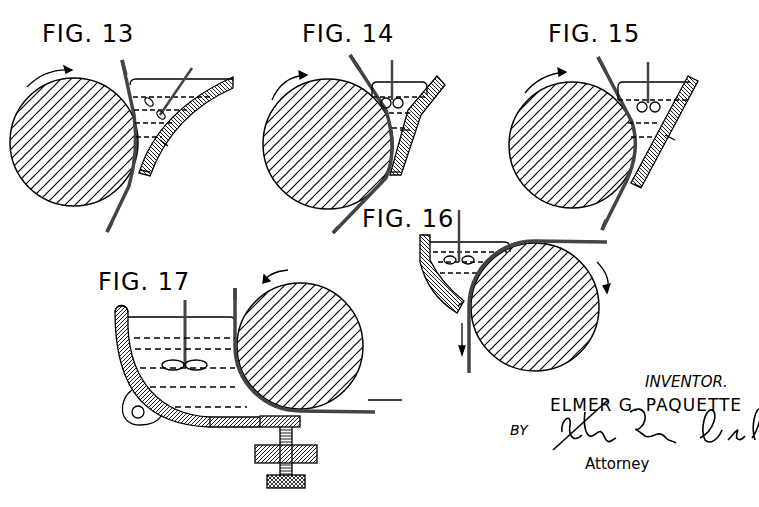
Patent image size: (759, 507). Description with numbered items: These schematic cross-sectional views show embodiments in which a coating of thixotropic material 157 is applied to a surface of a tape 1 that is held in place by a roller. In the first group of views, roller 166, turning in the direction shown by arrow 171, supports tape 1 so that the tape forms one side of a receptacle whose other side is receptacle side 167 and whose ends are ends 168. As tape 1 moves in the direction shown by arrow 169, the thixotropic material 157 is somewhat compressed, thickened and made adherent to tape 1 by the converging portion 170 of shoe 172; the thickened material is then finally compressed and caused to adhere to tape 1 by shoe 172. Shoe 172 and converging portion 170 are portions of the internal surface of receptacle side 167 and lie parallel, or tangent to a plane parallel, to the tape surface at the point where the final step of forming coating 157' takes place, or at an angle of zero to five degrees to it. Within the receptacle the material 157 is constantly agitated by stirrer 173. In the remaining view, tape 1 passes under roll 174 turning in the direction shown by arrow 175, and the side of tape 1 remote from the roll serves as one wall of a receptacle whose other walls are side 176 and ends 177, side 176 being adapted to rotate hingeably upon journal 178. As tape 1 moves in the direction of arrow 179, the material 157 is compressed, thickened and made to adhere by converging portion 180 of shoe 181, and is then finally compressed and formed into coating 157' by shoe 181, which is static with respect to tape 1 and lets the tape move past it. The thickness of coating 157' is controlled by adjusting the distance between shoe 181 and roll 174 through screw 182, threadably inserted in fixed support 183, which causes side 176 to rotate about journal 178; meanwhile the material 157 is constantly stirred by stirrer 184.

In FIG. 13, the tape 1 is at (121, 61).
In FIG. 14, the tape 1 is at (356, 62).
In FIG. 15, the tape 1 is at (603, 58).
In FIG. 17, the tape 1 is at (236, 291).
In FIG. 13, the thixotropic material 157 is at (185, 91).
In FIG. 14, the thixotropic material 157 is at (424, 93).
In FIG. 15, the thixotropic material 157 is at (653, 89).
In FIG. 16, the thixotropic material 157 is at (516, 243).
In FIG. 17, the thixotropic material 157 is at (161, 372).
In FIG. 13, the coating 157' is at (146, 146).
In FIG. 14, the coating 157' is at (385, 144).
In FIG. 15, the coating 157' is at (652, 143).
In FIG. 17, the coating 157' is at (328, 366).
In FIG. 13, the roller 166 is at (72, 197).
In FIG. 14, the roller 166 is at (290, 172).
In FIG. 15, the roller 166 is at (528, 157).
In FIG. 16, the roller 166 is at (587, 318).
In FIG. 13, the receptacle side 167 is at (201, 109).
In FIG. 14, the receptacle side 167 is at (442, 94).
In FIG. 15, the receptacle side 167 is at (703, 92).
In FIG. 13, the ends 168 is at (140, 90).
In FIG. 14, the ends 168 is at (400, 85).
In FIG. 15, the ends 168 is at (676, 87).
In FIG. 13, the arrow 169 is at (131, 205).
In FIG. 14, the arrow 169 is at (347, 218).
In FIG. 15, the arrow 169 is at (627, 203).
In FIG. 16, the arrow 169 is at (470, 353).
In FIG. 13, the converging portion 170 is at (168, 141).
In FIG. 14, the converging portion 170 is at (410, 133).
In FIG. 15, the converging portion 170 is at (681, 123).
In FIG. 16, the converging portion 170 is at (434, 284).
In FIG. 13, the arrow 171 is at (43, 73).
In FIG. 14, the arrow 171 is at (287, 80).
In FIG. 15, the arrow 171 is at (544, 78).
In FIG. 13, the shoe 172 is at (149, 164).
In FIG. 14, the shoe 172 is at (403, 160).
In FIG. 15, the shoe 172 is at (648, 174).
In FIG. 16, the shoe 172 is at (457, 309).
In FIG. 13, the stirrer 173 is at (192, 68).
In FIG. 14, the stirrer 173 is at (392, 60).
In FIG. 15, the stirrer 173 is at (648, 62).
In FIG. 16, the stirrer 173 is at (463, 222).
In FIG. 17, the roll 174 is at (320, 292).
In FIG. 17, the arrow 175 is at (285, 270).
In FIG. 17, the side 176 is at (133, 377).
In FIG. 17, the ends 177 is at (118, 303).
In FIG. 17, the journal 178 is at (138, 418).
In FIG. 17, the arrow 179 is at (385, 390).
In FIG. 17, the converging portion 180 is at (257, 428).
In FIG. 17, the shoe 181 is at (302, 427).
In FIG. 17, the screw 182 is at (305, 481).
In FIG. 17, the fixed support 183 is at (317, 455).
In FIG. 17, the stirrer 184 is at (187, 316).